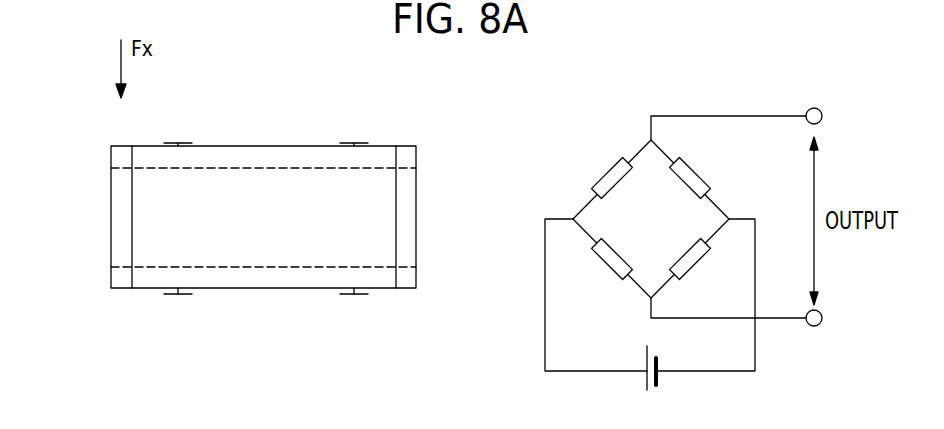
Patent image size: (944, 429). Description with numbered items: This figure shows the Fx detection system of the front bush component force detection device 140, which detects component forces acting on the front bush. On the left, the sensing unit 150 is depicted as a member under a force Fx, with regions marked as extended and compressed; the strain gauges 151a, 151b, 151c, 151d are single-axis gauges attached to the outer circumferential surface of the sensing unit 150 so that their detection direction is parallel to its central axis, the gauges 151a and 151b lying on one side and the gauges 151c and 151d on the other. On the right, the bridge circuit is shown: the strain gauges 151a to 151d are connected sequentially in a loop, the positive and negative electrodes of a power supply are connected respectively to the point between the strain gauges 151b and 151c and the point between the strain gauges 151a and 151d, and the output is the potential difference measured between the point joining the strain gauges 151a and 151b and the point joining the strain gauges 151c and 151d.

The front bush component force detection device 140 is at (86, 110).
The sensing unit 150 is at (263, 146).
The strain gauge 151a is at (181, 142).
The strain gauge 151b is at (353, 142).
The strain gauge 151c is at (355, 294).
The strain gauge 151d is at (180, 294).